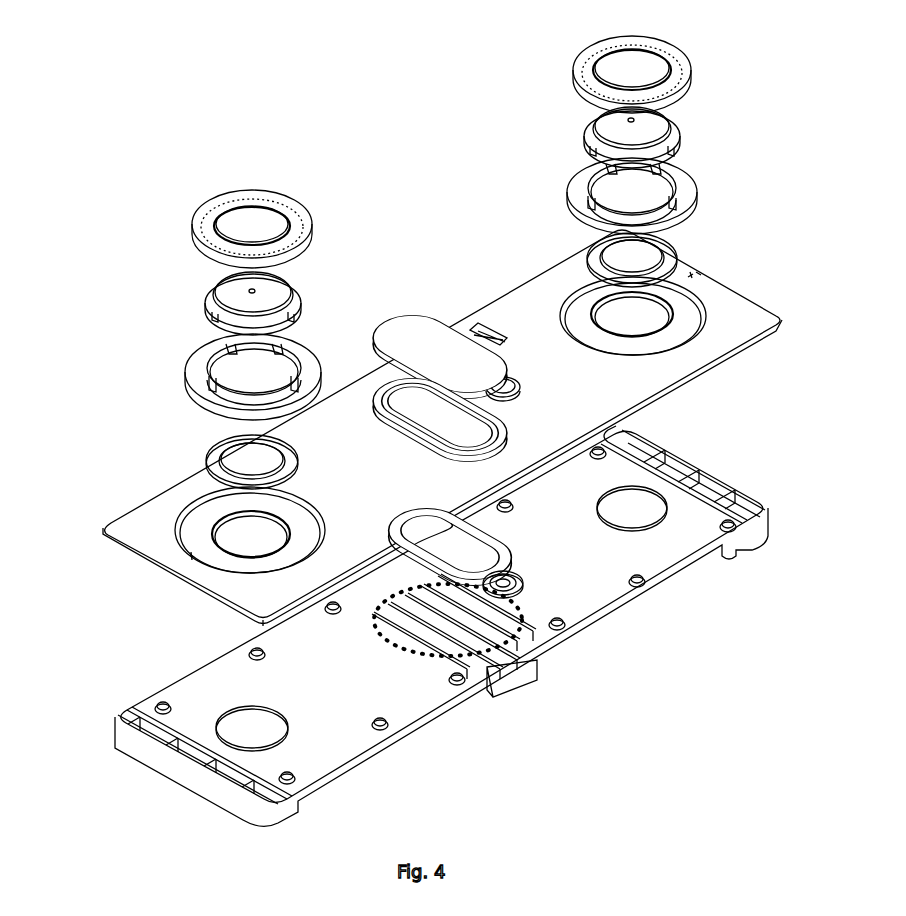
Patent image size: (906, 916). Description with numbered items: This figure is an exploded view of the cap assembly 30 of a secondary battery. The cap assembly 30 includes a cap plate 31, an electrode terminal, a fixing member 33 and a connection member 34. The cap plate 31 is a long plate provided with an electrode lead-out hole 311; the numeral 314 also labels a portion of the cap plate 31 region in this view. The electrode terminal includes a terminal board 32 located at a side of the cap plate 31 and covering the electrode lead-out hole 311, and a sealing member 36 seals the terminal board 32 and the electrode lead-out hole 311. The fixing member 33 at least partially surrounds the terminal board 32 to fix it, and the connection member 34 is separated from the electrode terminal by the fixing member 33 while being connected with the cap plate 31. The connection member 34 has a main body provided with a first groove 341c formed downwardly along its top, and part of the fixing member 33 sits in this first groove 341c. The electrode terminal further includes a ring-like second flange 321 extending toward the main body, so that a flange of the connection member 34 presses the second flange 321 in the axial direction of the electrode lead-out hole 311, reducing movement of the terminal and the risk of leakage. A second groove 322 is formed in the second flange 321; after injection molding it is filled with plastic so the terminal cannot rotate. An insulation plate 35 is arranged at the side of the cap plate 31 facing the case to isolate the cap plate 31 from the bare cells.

The cap assembly 30 is at (422, 204).
The cap plate 31 is at (732, 310).
The electrode lead-out hole 311 is at (253, 538).
The boss of upper plate 314 is at (222, 511).
The terminal board 32 is at (244, 293).
The second flange 321 is at (218, 293).
The second groove 322 is at (220, 326).
The fixing member 33 is at (212, 213).
The connection member 34 is at (204, 390).
The first groove 341c is at (212, 398).
The insulation plate 35 is at (683, 545).
The sealing member 36 is at (214, 478).